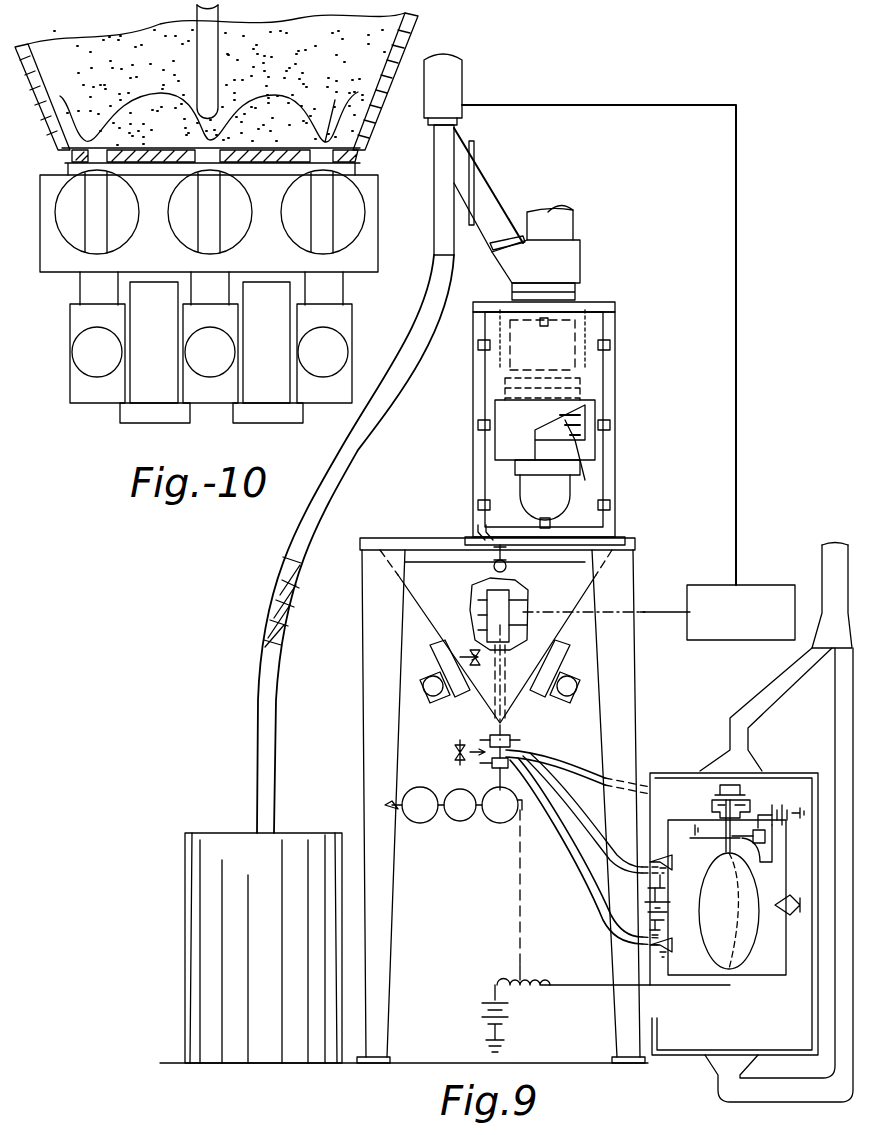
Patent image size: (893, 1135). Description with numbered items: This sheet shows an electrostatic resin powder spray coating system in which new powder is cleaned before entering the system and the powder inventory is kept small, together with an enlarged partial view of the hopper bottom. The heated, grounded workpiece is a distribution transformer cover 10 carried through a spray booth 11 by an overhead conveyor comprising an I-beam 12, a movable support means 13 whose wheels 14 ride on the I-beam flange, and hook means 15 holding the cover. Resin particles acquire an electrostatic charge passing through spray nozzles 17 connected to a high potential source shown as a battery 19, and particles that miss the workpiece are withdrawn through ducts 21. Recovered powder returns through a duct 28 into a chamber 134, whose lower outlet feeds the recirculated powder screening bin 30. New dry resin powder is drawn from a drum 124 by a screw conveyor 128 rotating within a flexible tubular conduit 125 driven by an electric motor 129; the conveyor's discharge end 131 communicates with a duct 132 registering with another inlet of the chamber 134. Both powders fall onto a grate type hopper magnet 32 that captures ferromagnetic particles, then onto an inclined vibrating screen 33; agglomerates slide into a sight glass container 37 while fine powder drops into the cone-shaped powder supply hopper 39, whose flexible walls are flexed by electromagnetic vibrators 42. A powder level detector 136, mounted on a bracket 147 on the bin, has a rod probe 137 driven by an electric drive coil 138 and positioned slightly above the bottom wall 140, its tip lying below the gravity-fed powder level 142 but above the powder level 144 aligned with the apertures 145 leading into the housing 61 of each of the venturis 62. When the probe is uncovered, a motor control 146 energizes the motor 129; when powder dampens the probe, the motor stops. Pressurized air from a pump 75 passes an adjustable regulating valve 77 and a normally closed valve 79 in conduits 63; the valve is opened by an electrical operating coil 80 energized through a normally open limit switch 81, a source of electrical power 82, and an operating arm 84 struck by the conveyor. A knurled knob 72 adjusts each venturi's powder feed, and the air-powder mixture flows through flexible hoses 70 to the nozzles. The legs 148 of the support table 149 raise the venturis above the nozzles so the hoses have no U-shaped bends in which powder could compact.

In FIG. 9, the distribution transformer cover 10 is at (733, 968).
In FIG. 9, the spray booth 11 is at (776, 773).
In FIG. 9, the I-beam 12 is at (710, 800).
In FIG. 9, the movable support means 13 is at (722, 848).
In FIG. 9, the wheels 14 is at (736, 797).
In FIG. 9, the hook means 15 is at (729, 911).
In FIG. 9, the spray nozzles 17 is at (672, 945).
In FIG. 9, the battery 19 is at (640, 880).
In FIG. 9, the ducts 21 is at (750, 712).
In FIG. 9, the duct 28 is at (573, 220).
In FIG. 9, the recirculated powder screening bin 30 is at (600, 300).
In FIG. 9, the grate type hopper magnet 32 is at (580, 384).
In FIG. 9, the inclined vibrating screen 33 is at (583, 463).
In FIG. 9, the sight glass container 37 is at (530, 488).
In FIG. 10, the powder supply hopper 39 is at (394, 100).
In FIG. 9, the powder supply hopper 39 is at (433, 622).
In FIG. 9, the electromagnetic vibrators 42 is at (430, 700).
In FIG. 10, the housing 61 is at (72, 312).
In FIG. 10, the venturis 62 is at (92, 416).
In FIG. 9, the venturis 62 is at (508, 752).
In FIG. 9, the conduits 63 is at (395, 800).
In FIG. 9, the flexible hoses 70 is at (580, 775).
In FIG. 10, the knurled knob 72 is at (118, 362).
In FIG. 9, the pump 75 is at (417, 824).
In FIG. 9, the adjustable regulating valve 77 is at (462, 822).
In FIG. 9, the normally closed valve 79 is at (497, 824).
In FIG. 9, the electrical operating coil 80 is at (532, 992).
In FIG. 9, the normally open limit switch 81 is at (765, 838).
In FIG. 9, the source of electrical power 82 is at (785, 800).
In FIG. 9, the operating arm 84 is at (770, 862).
In FIG. 9, the drum 124 is at (186, 956).
In FIG. 9, the flexible tubular conduit 125 is at (258, 700).
In FIG. 9, the screw conveyor 128 is at (280, 640).
In FIG. 9, the electric motor 129 is at (458, 74).
In FIG. 9, the discharge end 131 is at (476, 160).
In FIG. 9, the duct 132 is at (490, 190).
In FIG. 9, the chamber 134 is at (580, 250).
In FIG. 9, the powder level detector 136 is at (466, 600).
In FIG. 10, the rod probe 137 is at (218, 48).
In FIG. 9, the rod probe 137 is at (493, 700).
In FIG. 9, the electric drive coil 138 is at (520, 580).
In FIG. 10, the bottom wall 140 is at (272, 140).
In FIG. 10, the powder level 142 is at (285, 98).
In FIG. 10, the powder level 144 is at (350, 106).
In FIG. 10, the apertures 145 is at (360, 165).
In FIG. 9, the motor control 146 is at (786, 584).
In FIG. 9, the bracket 147 is at (480, 532).
In FIG. 9, the legs 148 is at (365, 802).
In FIG. 9, the support table 149 is at (656, 569).